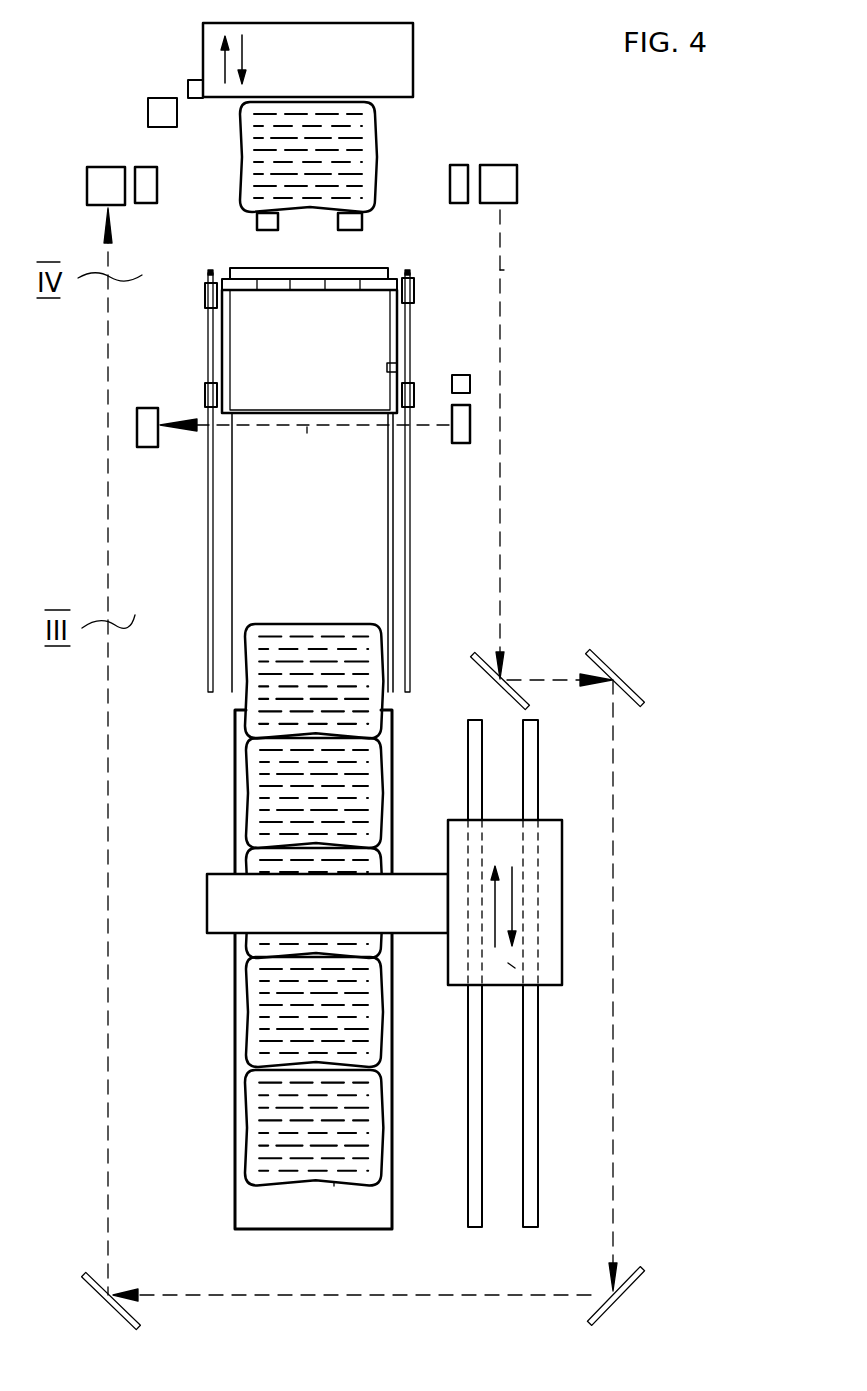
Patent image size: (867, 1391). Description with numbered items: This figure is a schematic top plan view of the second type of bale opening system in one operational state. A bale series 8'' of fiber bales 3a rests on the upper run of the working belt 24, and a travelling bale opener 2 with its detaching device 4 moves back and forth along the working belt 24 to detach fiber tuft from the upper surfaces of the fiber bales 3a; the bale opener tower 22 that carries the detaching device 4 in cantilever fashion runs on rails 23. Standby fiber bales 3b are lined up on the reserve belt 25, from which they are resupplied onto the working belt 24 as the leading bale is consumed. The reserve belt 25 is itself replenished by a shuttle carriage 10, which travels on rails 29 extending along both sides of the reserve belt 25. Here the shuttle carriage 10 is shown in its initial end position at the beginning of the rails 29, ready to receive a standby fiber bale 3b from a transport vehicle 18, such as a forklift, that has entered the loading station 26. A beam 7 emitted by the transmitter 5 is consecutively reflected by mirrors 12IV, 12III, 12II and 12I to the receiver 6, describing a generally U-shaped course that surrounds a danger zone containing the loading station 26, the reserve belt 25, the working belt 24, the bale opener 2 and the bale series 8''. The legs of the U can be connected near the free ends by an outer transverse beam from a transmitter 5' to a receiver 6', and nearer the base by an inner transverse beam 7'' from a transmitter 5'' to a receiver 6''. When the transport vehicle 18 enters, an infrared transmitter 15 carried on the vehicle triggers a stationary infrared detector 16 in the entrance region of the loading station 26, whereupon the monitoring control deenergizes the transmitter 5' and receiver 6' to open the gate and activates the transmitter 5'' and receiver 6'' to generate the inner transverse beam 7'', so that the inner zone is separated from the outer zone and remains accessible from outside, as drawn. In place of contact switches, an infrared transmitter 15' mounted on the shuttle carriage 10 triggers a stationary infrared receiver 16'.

The travelling bale opener 2 is at (562, 950).
The fiber bales 3a is at (270, 803).
The standby fiber bale 3b is at (353, 155).
The detaching device 4 is at (233, 905).
The transmitter 5 is at (519, 184).
The transmitter 5' is at (454, 204).
The transmitter 5'' is at (511, 439).
The receiver 6 is at (82, 186).
The receiver 6' is at (149, 205).
The receiver 6'' is at (112, 427).
The beam 7 is at (535, 266).
The inner transverse beam 7'' is at (323, 475).
The bale series 8'' is at (354, 1236).
The shuttle carriage 10 is at (377, 357).
The mirror 12I is at (102, 1291).
The mirror 12II is at (643, 1284).
The mirror 12III is at (602, 660).
The mirror 12IV is at (507, 658).
The infrared transmitter 15 is at (166, 76).
The infrared transmitter 15' is at (363, 378).
The infrared detector 16 is at (127, 115).
The infrared receiver 16' is at (511, 395).
The transport vehicle 18 is at (390, 67).
The bale opener tower 22 is at (508, 963).
The rails 23 is at (473, 740).
The working belt 24 is at (375, 1209).
The reserve belt 25 is at (252, 477).
The loading station 26 is at (455, 302).
The rails 29 is at (212, 548).